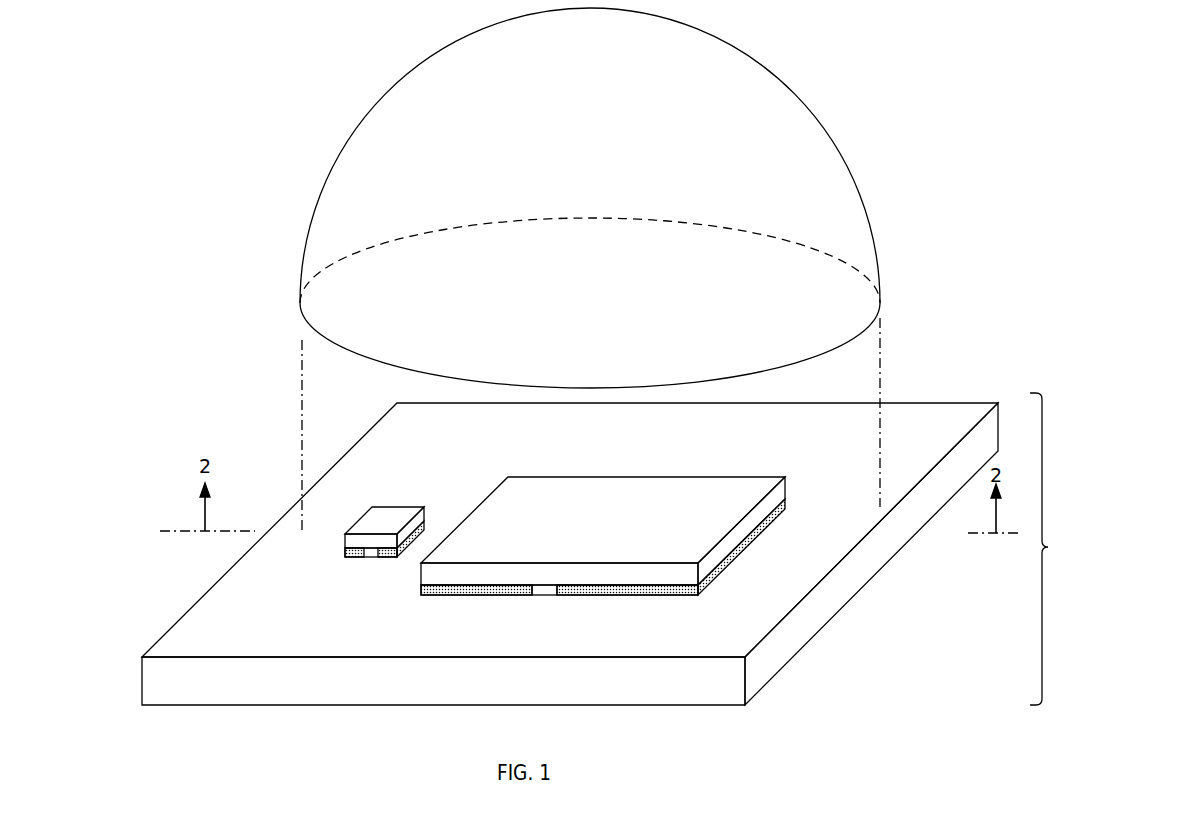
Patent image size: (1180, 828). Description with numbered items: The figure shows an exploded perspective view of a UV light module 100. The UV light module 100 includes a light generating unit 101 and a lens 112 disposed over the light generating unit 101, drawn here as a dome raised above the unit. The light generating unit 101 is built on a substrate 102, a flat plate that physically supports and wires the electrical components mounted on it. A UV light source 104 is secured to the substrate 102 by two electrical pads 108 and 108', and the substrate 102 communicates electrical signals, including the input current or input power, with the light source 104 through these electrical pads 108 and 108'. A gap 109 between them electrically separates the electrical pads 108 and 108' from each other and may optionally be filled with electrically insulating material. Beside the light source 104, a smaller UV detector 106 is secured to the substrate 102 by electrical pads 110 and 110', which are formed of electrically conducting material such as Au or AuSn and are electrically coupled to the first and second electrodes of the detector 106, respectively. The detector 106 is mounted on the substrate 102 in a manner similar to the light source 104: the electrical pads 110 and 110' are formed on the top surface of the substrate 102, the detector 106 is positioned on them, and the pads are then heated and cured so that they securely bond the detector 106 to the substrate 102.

The UV light module 100 is at (32, 62).
The light generating unit 101 is at (1081, 549).
The substrate 102 is at (170, 640).
The UV light source 104 is at (737, 482).
The UV detector 106 is at (380, 512).
The electrical pad 108 is at (558, 616).
The electrical pad 108' is at (741, 565).
The gap 109 is at (546, 591).
The electrical pad 110 is at (315, 589).
The electrical pad 110' is at (373, 581).
The lens 112 is at (330, 186).